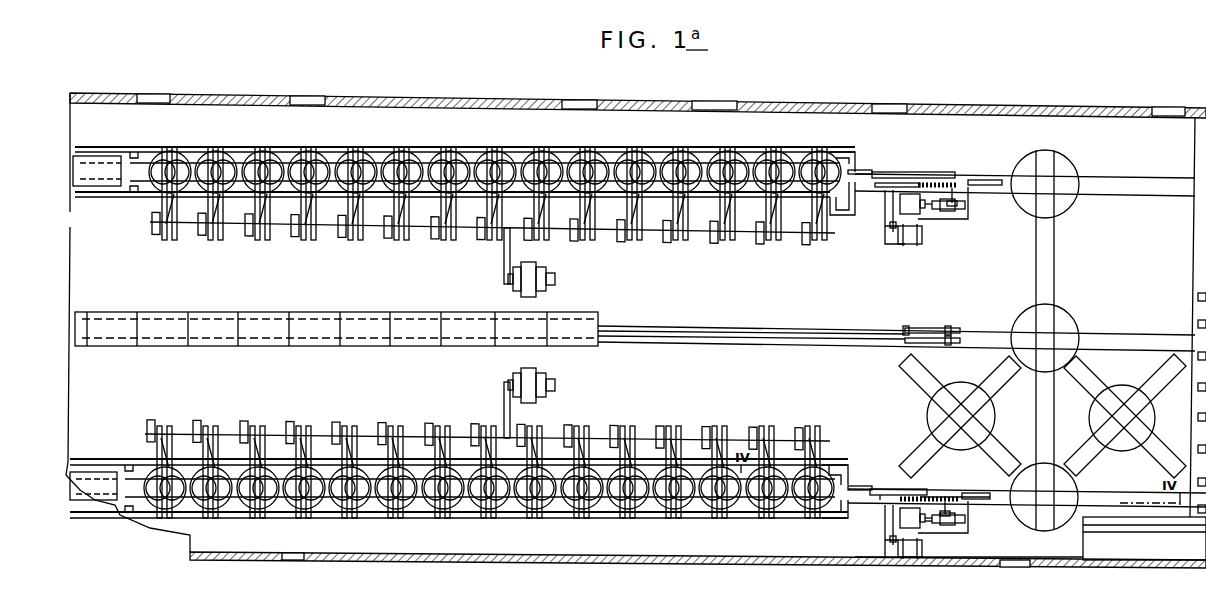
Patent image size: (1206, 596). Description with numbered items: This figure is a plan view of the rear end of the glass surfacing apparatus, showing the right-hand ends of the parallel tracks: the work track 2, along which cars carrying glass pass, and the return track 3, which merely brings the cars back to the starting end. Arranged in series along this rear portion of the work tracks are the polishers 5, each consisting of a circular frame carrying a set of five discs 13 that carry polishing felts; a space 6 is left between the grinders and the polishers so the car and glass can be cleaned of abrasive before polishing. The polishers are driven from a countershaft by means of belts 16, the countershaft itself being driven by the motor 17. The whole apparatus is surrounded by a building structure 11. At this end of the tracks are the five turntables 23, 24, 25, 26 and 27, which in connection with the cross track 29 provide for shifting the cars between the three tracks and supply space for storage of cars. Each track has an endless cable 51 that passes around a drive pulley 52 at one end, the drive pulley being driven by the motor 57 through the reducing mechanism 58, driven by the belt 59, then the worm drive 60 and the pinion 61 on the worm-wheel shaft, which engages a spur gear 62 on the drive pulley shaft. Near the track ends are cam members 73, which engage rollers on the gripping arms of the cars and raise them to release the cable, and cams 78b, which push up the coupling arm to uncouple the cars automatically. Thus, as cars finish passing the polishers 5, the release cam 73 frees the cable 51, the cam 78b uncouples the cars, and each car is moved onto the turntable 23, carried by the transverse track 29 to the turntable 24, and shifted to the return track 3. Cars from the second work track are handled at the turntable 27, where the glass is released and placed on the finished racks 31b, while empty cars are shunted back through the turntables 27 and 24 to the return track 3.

The work track 2 is at (867, 504).
The return track 3 is at (828, 343).
The polisher 5 is at (178, 158).
The space 6 is at (100, 225).
The building structure 11 is at (633, 565).
The disc 13 is at (340, 158).
The belt 16 is at (668, 222).
The motor 17 is at (548, 285).
The turntable 23 is at (1030, 205).
The turntable 24 is at (1015, 318).
The turntable 25 is at (1022, 520).
The turntable 26 is at (926, 414).
The turntable 27 is at (1093, 418).
The cross track 29 is at (1054, 267).
The finished rack 31b is at (1196, 388).
The cable 51 is at (890, 164).
The drive pulley 52 is at (920, 496).
The motor 57 is at (928, 242).
The reducing mechanism 58 is at (922, 526).
The belt 59 is at (890, 540).
The worm drive 60 is at (968, 519).
The pinion 61 is at (952, 496).
The spur gear 62 is at (908, 490).
The cam member 73 is at (879, 189).
The cam 78b is at (983, 180).